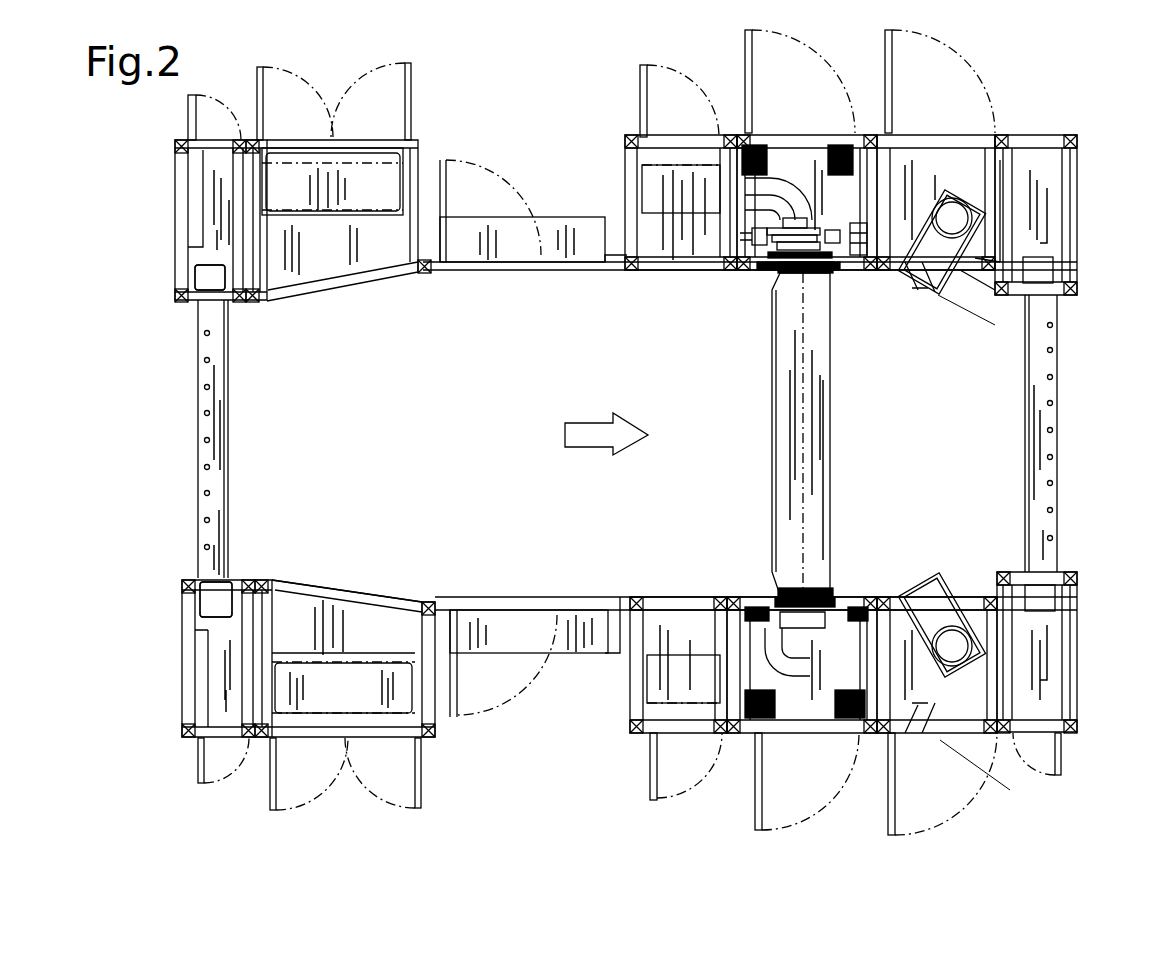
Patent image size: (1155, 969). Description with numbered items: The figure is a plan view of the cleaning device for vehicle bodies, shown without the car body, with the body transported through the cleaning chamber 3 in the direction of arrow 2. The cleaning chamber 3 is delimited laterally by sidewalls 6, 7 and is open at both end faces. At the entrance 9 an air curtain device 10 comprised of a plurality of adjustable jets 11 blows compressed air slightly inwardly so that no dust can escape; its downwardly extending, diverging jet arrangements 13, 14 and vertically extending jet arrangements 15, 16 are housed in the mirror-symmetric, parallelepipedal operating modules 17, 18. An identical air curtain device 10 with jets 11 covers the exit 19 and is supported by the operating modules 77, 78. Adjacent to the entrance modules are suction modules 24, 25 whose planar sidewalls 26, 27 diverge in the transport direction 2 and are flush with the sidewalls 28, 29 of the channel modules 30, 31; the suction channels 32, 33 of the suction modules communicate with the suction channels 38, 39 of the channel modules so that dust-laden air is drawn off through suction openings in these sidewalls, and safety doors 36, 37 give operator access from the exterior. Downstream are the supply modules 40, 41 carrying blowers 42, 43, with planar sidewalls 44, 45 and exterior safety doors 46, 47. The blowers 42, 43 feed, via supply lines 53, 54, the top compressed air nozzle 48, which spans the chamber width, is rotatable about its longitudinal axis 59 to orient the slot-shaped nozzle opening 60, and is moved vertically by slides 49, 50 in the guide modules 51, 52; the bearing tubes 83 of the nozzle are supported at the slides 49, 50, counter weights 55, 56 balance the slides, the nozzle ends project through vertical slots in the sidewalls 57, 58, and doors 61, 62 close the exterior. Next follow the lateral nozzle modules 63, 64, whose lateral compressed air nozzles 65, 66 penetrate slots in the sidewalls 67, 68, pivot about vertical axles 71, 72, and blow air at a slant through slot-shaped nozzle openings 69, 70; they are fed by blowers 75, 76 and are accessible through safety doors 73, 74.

The transport direction arrow 2 is at (583, 438).
The cleaning chamber 3 is at (495, 580).
The sidewall 6 is at (484, 272).
The sidewall 7 is at (572, 597).
The entrance 9 is at (198, 460).
The air curtain device 10 is at (228, 482).
The jets 11 is at (210, 333).
The jet arrangement 13 is at (205, 275).
The jet arrangement 14 is at (212, 603).
The jet arrangement 15 is at (210, 277).
The jet arrangement 16 is at (216, 599).
The operating module 17 is at (208, 190).
The operating module 18 is at (218, 705).
The exit 19 is at (1058, 492).
The suction module 24 is at (385, 248).
The suction module 25 is at (410, 718).
The sidewall 26 is at (360, 285).
The sidewall 27 is at (326, 586).
The sidewall 28 is at (552, 265).
The sidewall 29 is at (462, 610).
The channel module 30 is at (572, 235).
The channel module 31 is at (575, 640).
The suction channel 32 is at (350, 180).
The suction channel 33 is at (355, 690).
The door 36 is at (262, 95).
The door 37 is at (318, 760).
The suction channel 38 is at (500, 225).
The suction channel 39 is at (598, 655).
The supply module 40 is at (650, 155).
The supply module 41 is at (665, 745).
The blower 42 is at (678, 230).
The blower 43 is at (660, 690).
The sidewall 44 is at (660, 275).
The sidewall 45 is at (655, 597).
The door 46 is at (650, 105).
The door 47 is at (660, 775).
The top compressed air nozzle 48 is at (820, 410).
The slide 49 is at (752, 250).
The slide 50 is at (755, 600).
The guide module 51 is at (798, 165).
The guide module 52 is at (800, 710).
The supply line 53 is at (892, 130).
The supply line 54 is at (790, 655).
The counter weight 55 is at (760, 150).
The counter weight 56 is at (850, 720).
The sidewall 57 is at (820, 265).
The sidewall 58 is at (830, 597).
The longitudinal axis 59 is at (805, 443).
The nozzle opening 60 is at (774, 395).
The door 61 is at (752, 92).
The door 62 is at (758, 808).
The lateral nozzle module 63 is at (950, 188).
The lateral nozzle module 64 is at (955, 740).
The lateral compressed air nozzle 65 is at (950, 265).
The lateral compressed air nozzle 66 is at (920, 590).
The sidewall 67 is at (905, 270).
The sidewall 68 is at (895, 597).
The nozzle opening 69 is at (925, 285).
The nozzle opening 70 is at (938, 655).
The vertical axle 71 is at (948, 210).
The vertical axle 72 is at (985, 700).
The safety door 73 is at (893, 90).
The safety door 74 is at (896, 830).
The blower 75 is at (1038, 260).
The blower 76 is at (1030, 600).
The operating module 77 is at (1050, 172).
The operating module 78 is at (1050, 683).
The bearing tube 83 is at (815, 276).